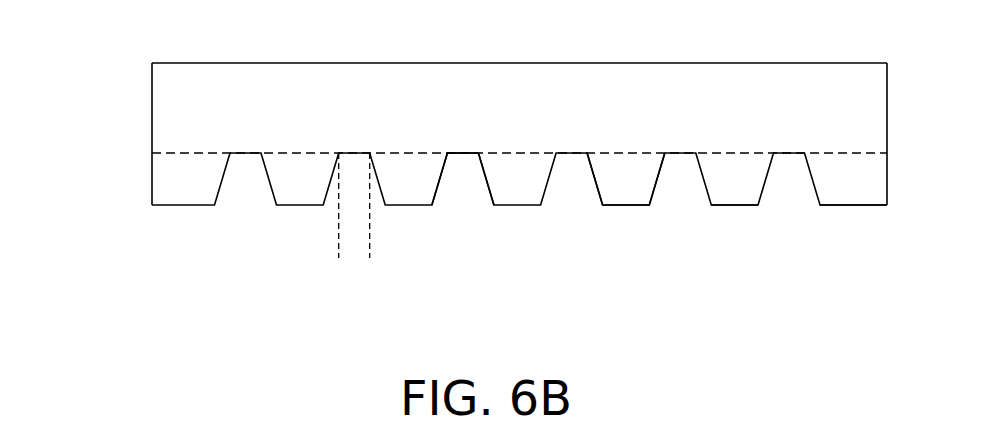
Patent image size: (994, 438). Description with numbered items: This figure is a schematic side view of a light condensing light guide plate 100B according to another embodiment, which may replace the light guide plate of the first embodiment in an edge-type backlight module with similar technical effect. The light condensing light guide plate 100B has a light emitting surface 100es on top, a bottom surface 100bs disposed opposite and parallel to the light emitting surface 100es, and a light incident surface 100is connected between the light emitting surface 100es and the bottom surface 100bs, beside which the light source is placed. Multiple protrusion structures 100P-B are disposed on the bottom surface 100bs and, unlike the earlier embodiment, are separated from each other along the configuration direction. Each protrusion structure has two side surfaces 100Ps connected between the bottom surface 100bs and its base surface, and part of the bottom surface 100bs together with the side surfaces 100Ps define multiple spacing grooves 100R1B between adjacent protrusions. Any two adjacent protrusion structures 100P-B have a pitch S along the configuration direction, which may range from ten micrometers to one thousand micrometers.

The light condensing light guide plate 100B is at (925, 331).
The light emitting surface 100es is at (195, 62).
The light incident surface 100is is at (175, 108).
The bottom surface 100bs is at (183, 165).
The pitch S is at (370, 252).
The side surfaces 100Ps is at (442, 178).
The spacing grooves 100R1B is at (677, 194).
The protrusion structures 100P-B is at (837, 190).